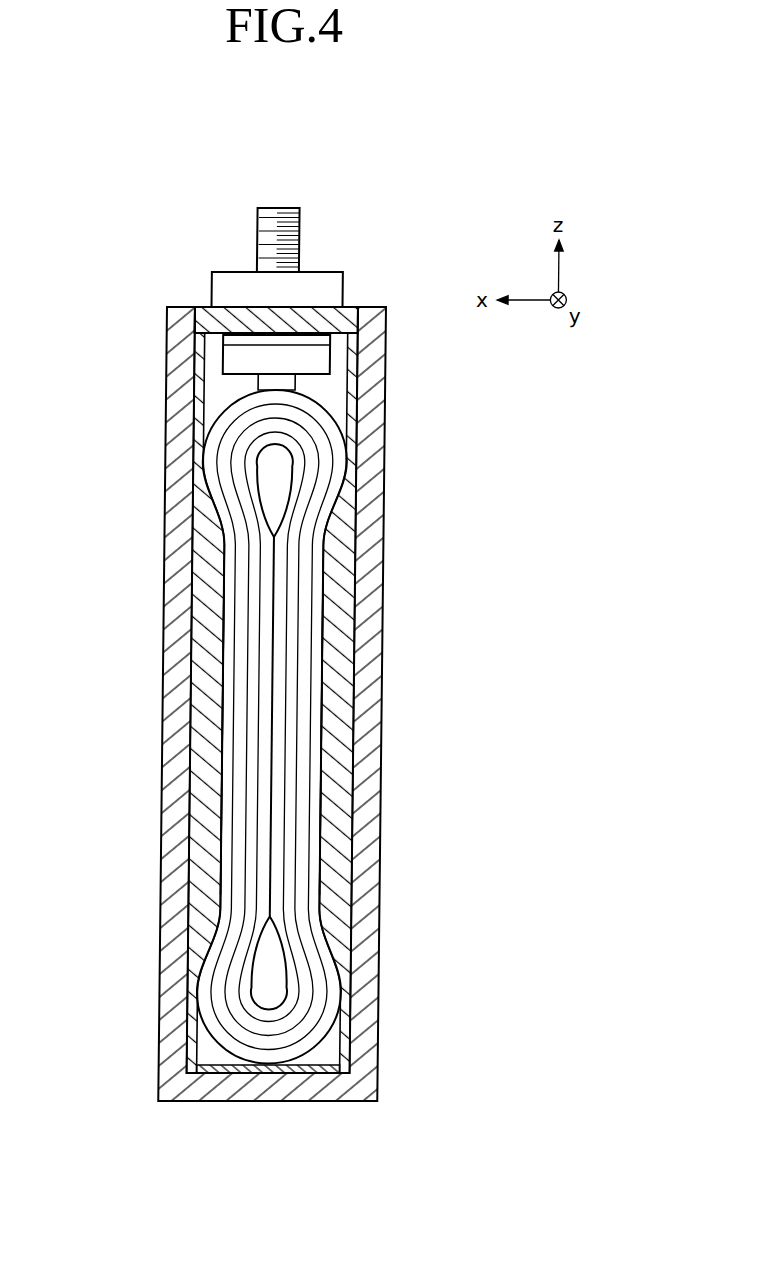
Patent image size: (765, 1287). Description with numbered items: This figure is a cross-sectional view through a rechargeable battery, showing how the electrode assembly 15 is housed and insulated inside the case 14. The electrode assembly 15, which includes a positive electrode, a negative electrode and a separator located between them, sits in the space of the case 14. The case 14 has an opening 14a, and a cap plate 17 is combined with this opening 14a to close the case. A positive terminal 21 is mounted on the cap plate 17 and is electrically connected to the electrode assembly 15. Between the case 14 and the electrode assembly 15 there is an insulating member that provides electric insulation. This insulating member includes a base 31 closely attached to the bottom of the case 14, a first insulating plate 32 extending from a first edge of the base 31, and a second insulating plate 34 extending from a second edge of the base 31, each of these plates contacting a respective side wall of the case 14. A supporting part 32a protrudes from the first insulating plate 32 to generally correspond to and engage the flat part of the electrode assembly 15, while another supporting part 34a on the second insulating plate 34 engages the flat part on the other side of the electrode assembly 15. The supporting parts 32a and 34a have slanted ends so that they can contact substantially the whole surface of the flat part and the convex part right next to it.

The case 14 is at (373, 429).
The opening 14a is at (205, 320).
The cap plate 17 is at (348, 315).
The positive terminal 21 is at (276, 208).
The electrode assembly 15 is at (306, 587).
The base 31 is at (338, 1056).
The first insulating plate 32 is at (211, 642).
The supporting part 32a is at (229, 728).
The second insulating plate 34 is at (341, 648).
The supporting part 34a is at (335, 728).